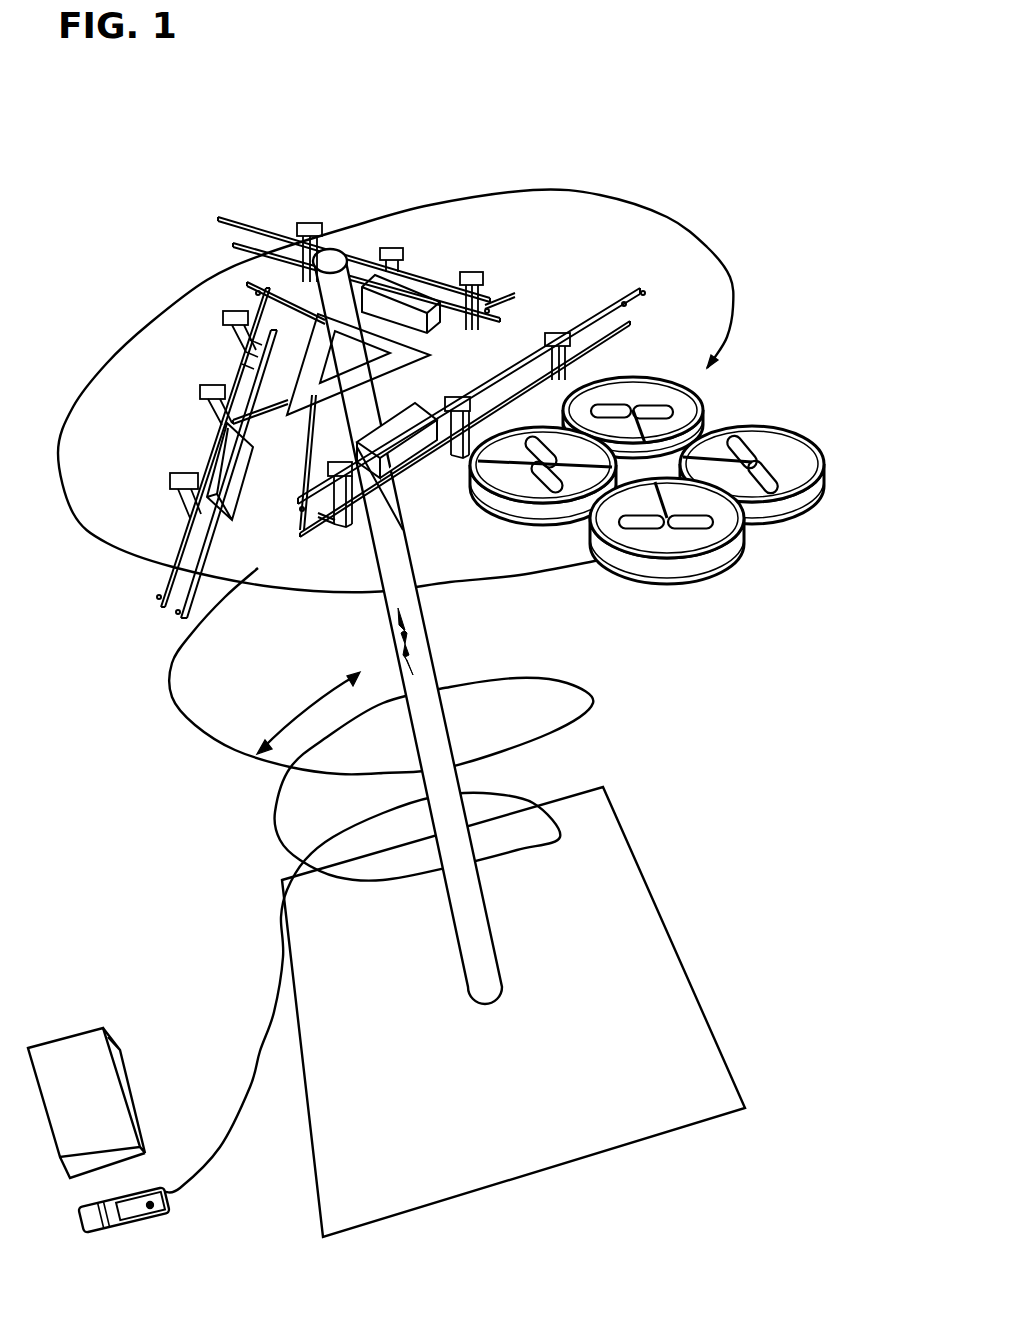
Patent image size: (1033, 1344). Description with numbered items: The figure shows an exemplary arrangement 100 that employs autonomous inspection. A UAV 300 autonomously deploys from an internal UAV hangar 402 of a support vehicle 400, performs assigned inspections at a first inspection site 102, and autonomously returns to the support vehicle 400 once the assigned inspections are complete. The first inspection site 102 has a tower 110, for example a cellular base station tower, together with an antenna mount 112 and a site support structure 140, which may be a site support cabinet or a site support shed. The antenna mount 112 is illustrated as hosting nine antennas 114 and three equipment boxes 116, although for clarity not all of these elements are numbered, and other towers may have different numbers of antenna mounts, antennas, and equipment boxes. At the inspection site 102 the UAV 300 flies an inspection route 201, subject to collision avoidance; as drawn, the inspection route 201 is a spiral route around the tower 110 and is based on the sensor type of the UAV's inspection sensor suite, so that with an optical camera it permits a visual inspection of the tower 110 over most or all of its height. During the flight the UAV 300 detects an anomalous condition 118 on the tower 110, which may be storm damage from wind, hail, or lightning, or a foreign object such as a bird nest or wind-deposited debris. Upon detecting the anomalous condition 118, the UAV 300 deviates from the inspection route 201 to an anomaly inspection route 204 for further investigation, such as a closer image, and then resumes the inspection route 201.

The arrangement 100 is at (758, 53).
The first inspection site 102 is at (513, 1012).
The tower 110 is at (480, 935).
The antenna mount 112 is at (410, 170).
The antennas 114 is at (320, 215).
The equipment boxes 116 is at (415, 300).
The anomalous condition 118 is at (412, 634).
The site support structure 140 is at (105, 1028).
The inspection route 201 is at (170, 688).
The anomaly inspection route 204 is at (313, 703).
The UAV 300 is at (738, 611).
The support vehicle 400 is at (90, 1237).
The internal UAV hangar 402 is at (153, 1210).